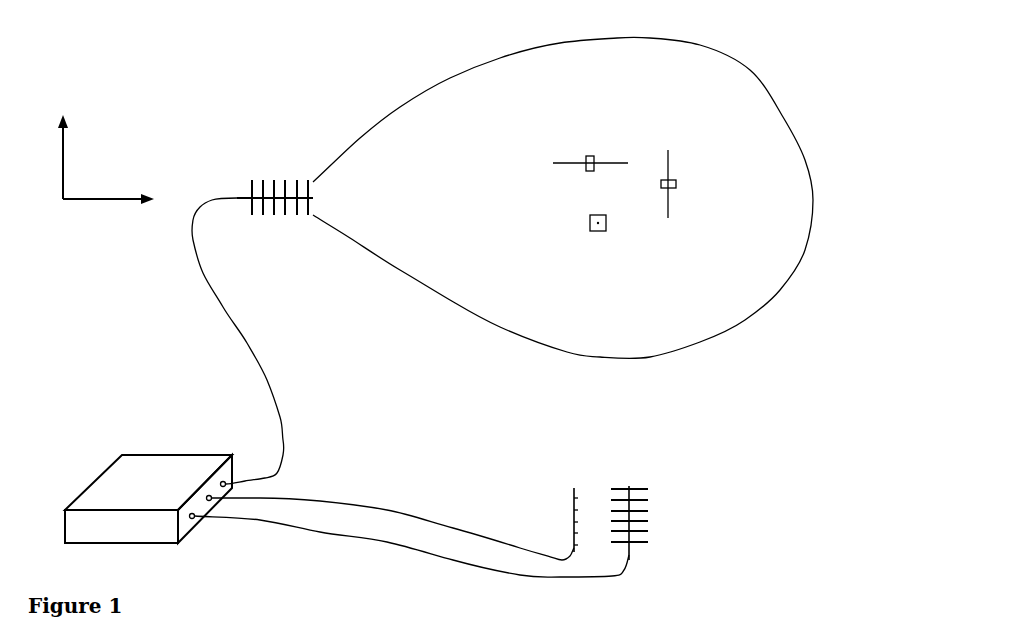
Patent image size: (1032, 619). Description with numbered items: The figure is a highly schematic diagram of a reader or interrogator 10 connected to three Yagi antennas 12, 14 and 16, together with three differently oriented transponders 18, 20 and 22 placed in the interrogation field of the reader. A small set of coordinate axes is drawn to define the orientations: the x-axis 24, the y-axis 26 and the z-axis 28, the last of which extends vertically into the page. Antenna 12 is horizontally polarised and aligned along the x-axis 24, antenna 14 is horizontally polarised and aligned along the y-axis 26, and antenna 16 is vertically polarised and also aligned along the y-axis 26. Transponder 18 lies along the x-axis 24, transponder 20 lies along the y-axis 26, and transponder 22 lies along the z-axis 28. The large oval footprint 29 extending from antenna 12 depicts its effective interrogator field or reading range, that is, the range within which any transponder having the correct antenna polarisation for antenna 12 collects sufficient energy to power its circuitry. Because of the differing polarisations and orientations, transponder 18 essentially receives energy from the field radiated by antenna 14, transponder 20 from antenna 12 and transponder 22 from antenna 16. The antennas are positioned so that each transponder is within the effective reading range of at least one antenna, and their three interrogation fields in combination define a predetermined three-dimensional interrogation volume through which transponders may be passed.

The reader 10 is at (163, 456).
The Yagi antenna 12 is at (262, 181).
The Yagi antenna 14 is at (648, 489).
The Yagi antenna 16 is at (574, 488).
The transponder 18 is at (595, 157).
The transponder 20 is at (676, 181).
The transponder 22 is at (590, 216).
The x-axis 24 is at (110, 199).
The y-axis 26 is at (63, 168).
The z-axis 28 is at (63, 199).
The oval footprint 29 is at (750, 71).